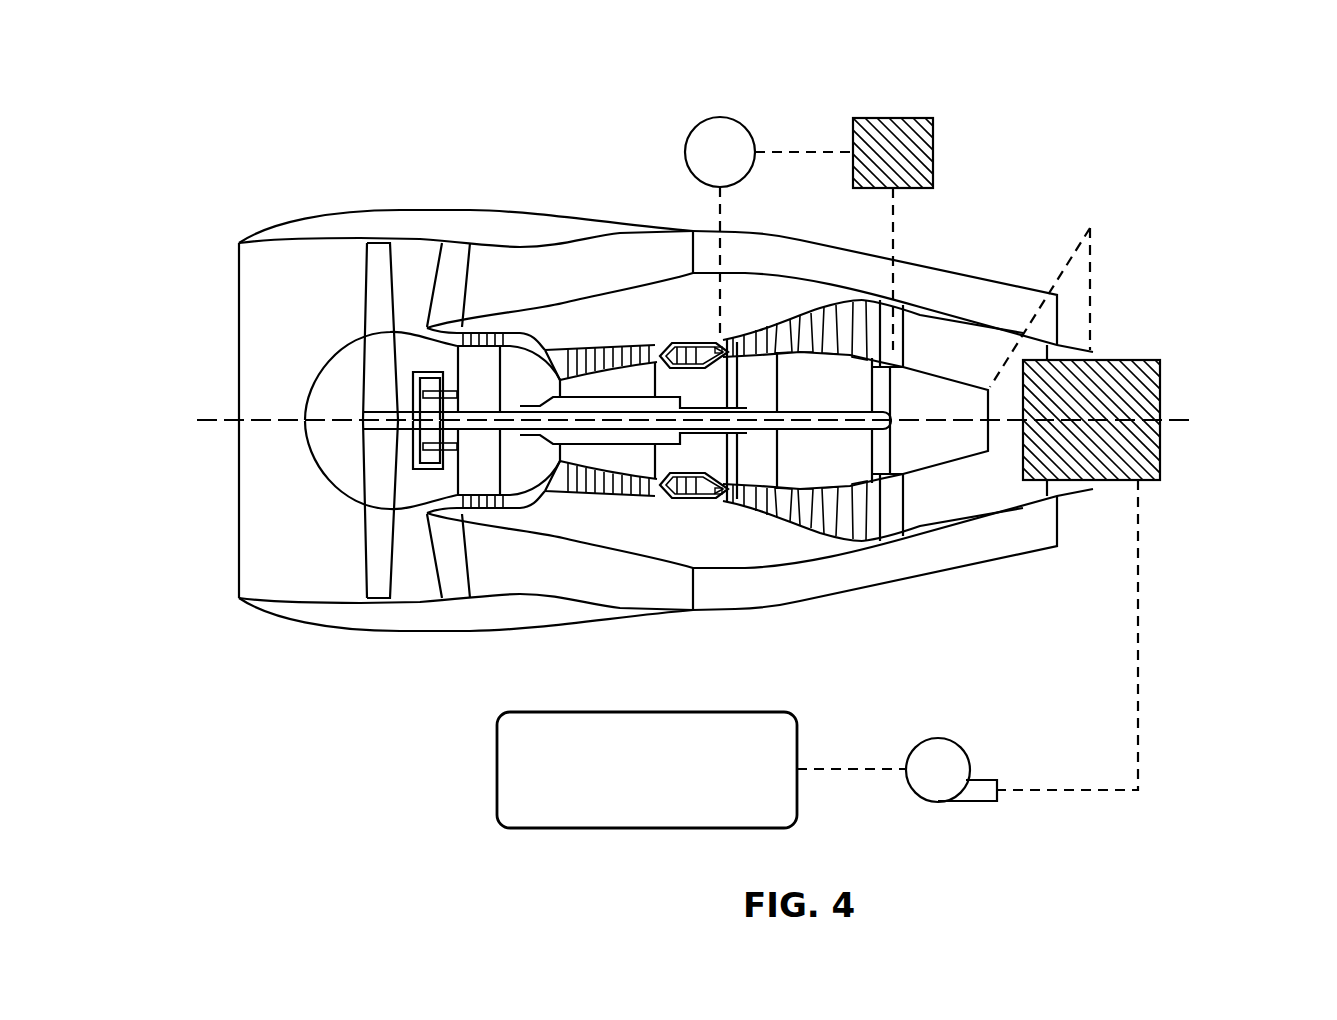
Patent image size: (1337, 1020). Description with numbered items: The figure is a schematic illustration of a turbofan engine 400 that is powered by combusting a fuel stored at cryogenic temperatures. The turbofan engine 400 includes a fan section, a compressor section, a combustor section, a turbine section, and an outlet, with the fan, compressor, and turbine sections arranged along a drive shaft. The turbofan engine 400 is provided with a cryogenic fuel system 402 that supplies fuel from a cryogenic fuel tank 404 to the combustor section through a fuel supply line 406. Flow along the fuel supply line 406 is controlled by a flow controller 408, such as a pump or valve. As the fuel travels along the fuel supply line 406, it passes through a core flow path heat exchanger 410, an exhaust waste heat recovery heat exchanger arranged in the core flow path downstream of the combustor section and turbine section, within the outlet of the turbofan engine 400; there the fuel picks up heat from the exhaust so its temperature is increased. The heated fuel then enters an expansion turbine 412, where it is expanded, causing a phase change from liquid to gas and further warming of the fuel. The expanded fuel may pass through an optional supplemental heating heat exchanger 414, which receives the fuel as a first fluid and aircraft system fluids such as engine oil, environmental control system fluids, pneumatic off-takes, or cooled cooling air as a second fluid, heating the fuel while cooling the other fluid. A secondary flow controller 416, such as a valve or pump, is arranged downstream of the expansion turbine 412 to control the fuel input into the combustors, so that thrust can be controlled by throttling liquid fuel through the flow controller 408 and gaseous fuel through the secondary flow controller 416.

The turbofan engine 400 is at (1164, 66).
The cryogenic fuel system 402 is at (1214, 692).
The cryogenic fuel tank 404 is at (497, 768).
The fuel supply line 406 is at (793, 152).
The flow controller 408 is at (950, 803).
The core flow path heat exchanger 410 is at (1160, 377).
The expansion turbine 412 is at (943, 440).
The supplemental heating heat exchanger 414 is at (933, 152).
The secondary flow controller 416 is at (685, 152).